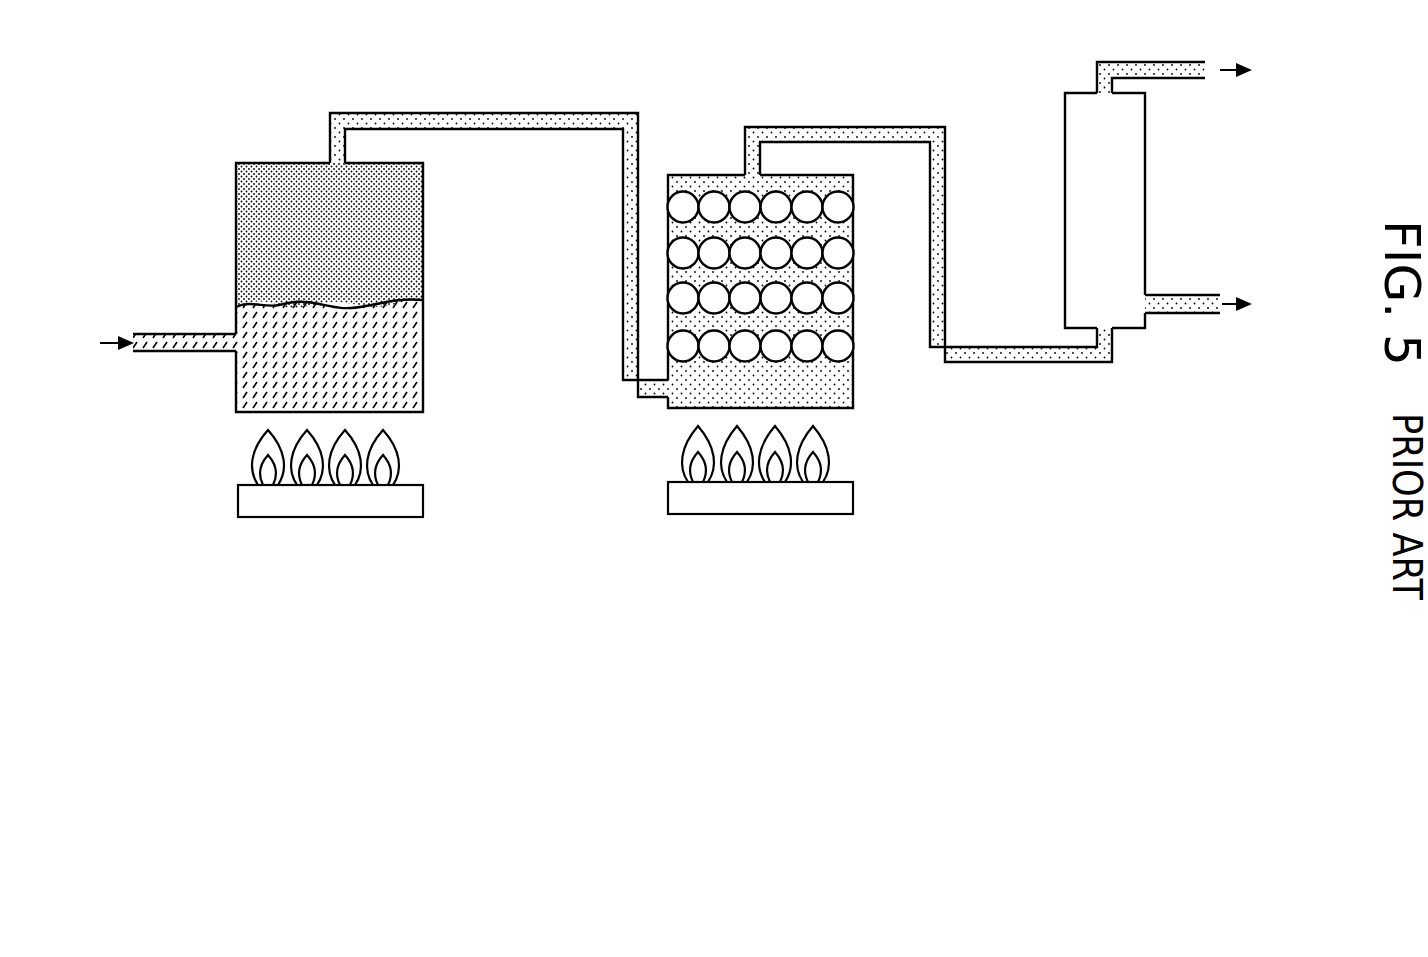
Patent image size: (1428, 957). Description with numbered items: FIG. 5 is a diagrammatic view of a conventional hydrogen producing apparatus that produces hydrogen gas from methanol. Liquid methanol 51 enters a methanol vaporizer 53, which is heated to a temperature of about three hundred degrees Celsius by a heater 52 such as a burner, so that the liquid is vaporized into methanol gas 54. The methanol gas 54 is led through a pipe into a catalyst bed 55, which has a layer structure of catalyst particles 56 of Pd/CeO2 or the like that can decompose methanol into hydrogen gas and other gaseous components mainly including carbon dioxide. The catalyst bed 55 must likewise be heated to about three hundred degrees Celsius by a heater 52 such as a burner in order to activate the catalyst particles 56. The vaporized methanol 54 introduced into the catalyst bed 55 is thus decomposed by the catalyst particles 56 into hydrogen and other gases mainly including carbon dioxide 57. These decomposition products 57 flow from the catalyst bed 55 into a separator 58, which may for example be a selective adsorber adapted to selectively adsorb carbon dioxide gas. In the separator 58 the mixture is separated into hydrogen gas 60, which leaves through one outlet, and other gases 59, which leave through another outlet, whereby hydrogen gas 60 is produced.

The liquid methanol 51 is at (141, 333).
The heater 52 is at (338, 552).
The methanol vaporizer 53 is at (449, 293).
The methanol gas 54 is at (523, 120).
The catalyst bed 55 is at (703, 148).
The catalyst particles 56 is at (838, 254).
The hydrogen and other gases mainly including carbon dioxide 57 is at (805, 135).
The separator 58 is at (1042, 196).
The other gases 59 is at (1190, 308).
The hydrogen gas 60 is at (1160, 70).